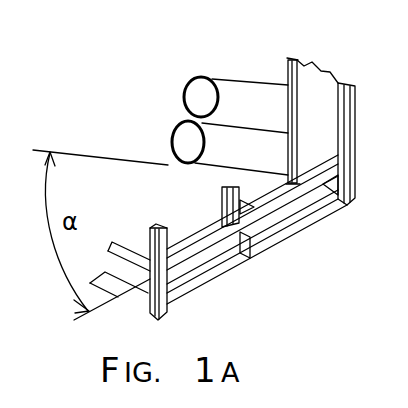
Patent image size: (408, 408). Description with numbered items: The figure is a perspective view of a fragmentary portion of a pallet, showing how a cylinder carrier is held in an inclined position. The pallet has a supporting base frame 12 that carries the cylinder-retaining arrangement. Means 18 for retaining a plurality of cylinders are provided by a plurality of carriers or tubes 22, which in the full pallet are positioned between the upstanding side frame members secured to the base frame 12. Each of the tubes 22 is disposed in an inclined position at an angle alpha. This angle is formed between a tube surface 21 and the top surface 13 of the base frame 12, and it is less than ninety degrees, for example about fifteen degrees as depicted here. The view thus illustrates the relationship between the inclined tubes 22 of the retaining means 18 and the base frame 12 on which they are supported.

The supporting base frame 12 is at (196, 260).
The top surface 13 is at (136, 247).
The means for retaining a plurality of cylinders 18 is at (195, 121).
The tube surface 21 is at (201, 170).
The tubes 22 is at (229, 123).